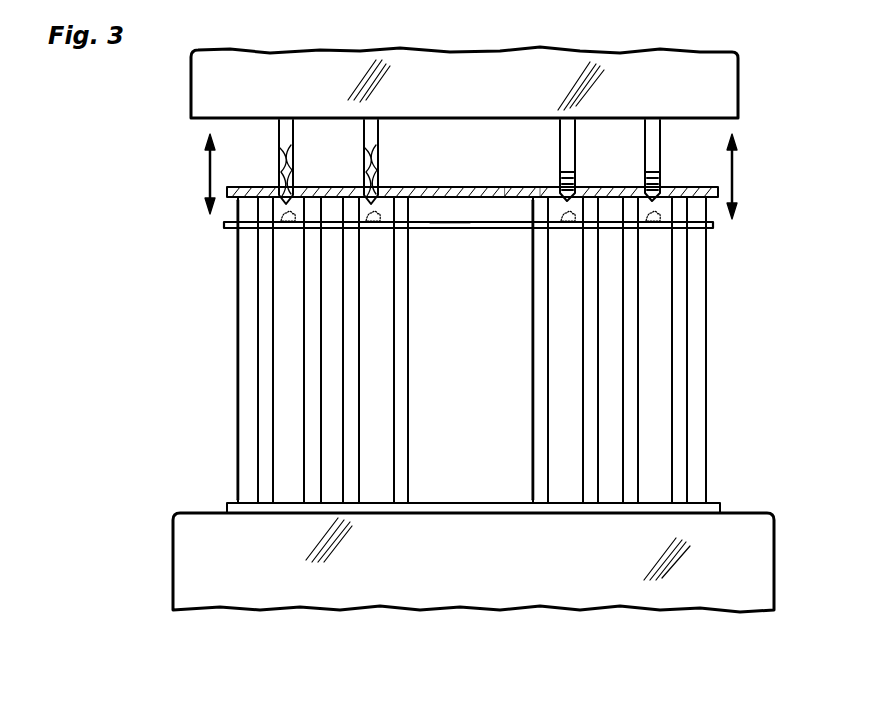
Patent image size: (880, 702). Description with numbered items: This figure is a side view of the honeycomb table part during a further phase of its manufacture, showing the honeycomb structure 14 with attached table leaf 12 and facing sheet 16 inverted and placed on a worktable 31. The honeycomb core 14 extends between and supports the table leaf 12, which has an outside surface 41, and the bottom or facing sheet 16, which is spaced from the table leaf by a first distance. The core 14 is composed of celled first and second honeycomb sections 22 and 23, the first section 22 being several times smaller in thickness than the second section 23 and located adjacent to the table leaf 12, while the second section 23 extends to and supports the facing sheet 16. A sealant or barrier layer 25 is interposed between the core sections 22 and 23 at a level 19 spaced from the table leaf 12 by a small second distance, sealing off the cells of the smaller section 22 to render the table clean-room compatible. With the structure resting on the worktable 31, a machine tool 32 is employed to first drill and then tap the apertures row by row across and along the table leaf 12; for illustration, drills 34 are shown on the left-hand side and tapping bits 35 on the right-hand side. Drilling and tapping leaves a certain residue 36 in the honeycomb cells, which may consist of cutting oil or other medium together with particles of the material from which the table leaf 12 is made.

The table leaf 12 is at (480, 187).
The honeycomb core 14 is at (254, 362).
The facing sheet 16 is at (470, 513).
The level 19 is at (510, 222).
The first honeycomb section 22 is at (230, 212).
The second honeycomb section 23 is at (238, 446).
The sealant or barrier layer 25 is at (450, 228).
The worktable 31 is at (173, 556).
The machine tool 32 is at (200, 102).
The drills 34 is at (365, 148).
The tapping bits 35 is at (645, 150).
The residue 36 is at (300, 222).
The outside surface 41 is at (526, 187).